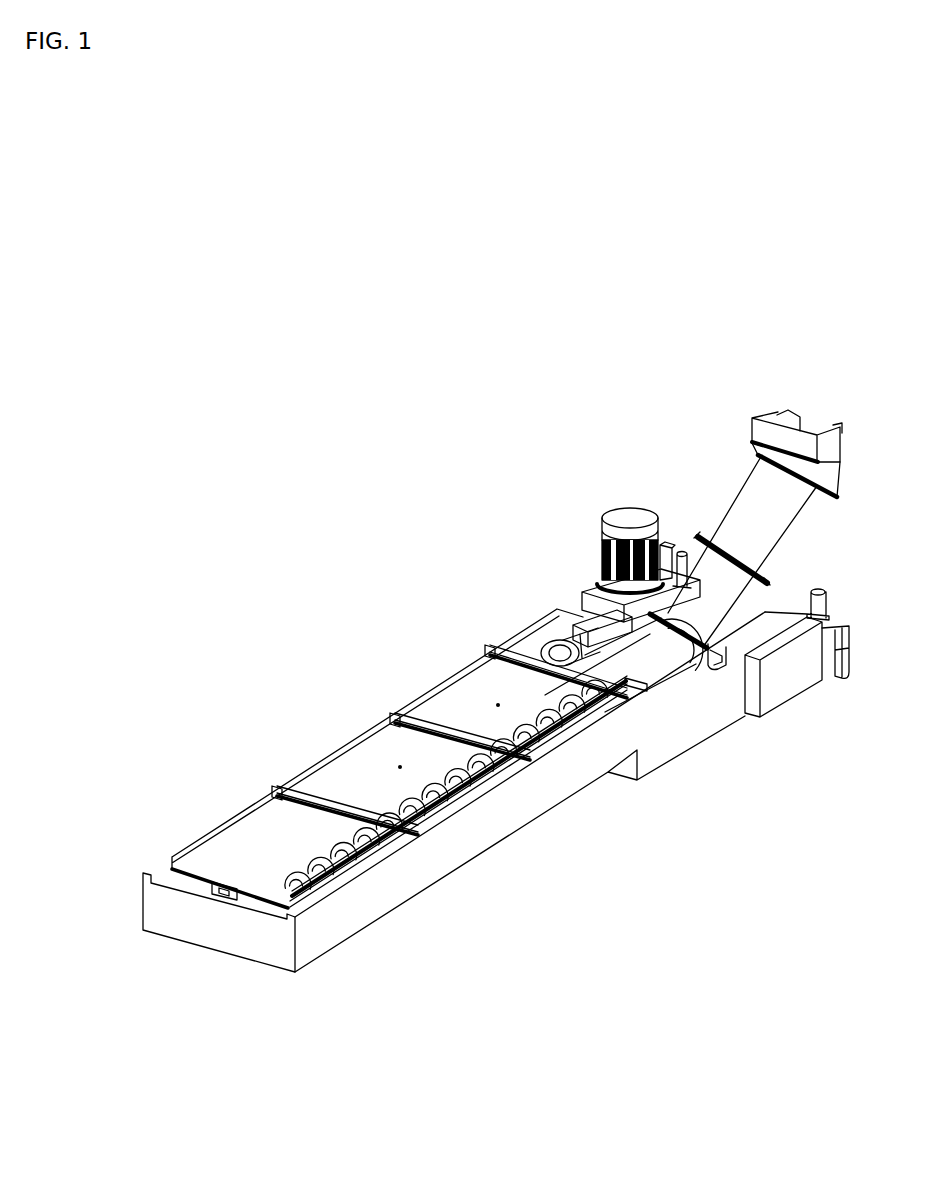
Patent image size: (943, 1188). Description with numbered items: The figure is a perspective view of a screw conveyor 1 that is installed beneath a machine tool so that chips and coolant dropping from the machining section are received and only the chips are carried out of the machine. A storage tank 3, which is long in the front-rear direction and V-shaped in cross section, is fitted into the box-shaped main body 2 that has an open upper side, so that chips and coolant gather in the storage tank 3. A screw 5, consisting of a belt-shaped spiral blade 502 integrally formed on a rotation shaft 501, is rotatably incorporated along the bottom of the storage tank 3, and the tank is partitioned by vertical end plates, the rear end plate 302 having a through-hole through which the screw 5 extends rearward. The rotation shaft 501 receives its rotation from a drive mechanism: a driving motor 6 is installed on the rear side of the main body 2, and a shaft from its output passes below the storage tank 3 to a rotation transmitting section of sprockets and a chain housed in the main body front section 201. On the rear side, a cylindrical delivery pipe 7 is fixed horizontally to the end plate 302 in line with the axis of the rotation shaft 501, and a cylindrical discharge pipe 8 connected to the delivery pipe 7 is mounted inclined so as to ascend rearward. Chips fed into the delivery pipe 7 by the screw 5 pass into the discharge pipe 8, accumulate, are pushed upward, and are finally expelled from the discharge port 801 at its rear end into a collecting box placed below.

The screw conveyor 1 is at (317, 389).
The main body 2 is at (465, 842).
The main body front section 201 is at (258, 902).
The storage tank 3 is at (243, 848).
The end plate 302 is at (553, 688).
The screw 5 is at (332, 628).
The rotation shaft 501 is at (437, 790).
The spiral blade 502 is at (397, 807).
The driving motor 6 is at (573, 637).
The delivery pipe 7 is at (655, 663).
The discharge pipe 8 is at (750, 520).
The discharge port 801 is at (803, 427).